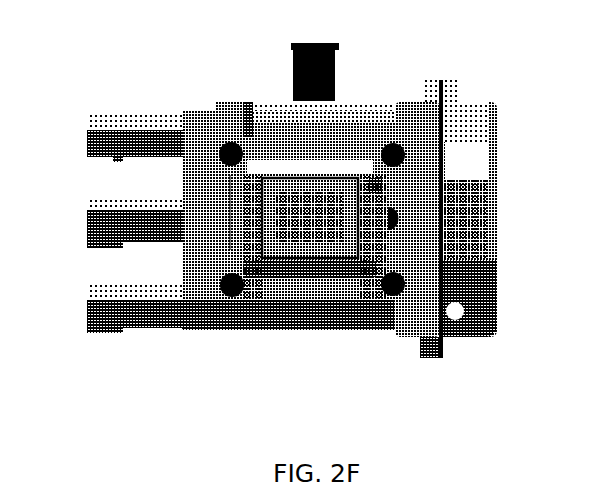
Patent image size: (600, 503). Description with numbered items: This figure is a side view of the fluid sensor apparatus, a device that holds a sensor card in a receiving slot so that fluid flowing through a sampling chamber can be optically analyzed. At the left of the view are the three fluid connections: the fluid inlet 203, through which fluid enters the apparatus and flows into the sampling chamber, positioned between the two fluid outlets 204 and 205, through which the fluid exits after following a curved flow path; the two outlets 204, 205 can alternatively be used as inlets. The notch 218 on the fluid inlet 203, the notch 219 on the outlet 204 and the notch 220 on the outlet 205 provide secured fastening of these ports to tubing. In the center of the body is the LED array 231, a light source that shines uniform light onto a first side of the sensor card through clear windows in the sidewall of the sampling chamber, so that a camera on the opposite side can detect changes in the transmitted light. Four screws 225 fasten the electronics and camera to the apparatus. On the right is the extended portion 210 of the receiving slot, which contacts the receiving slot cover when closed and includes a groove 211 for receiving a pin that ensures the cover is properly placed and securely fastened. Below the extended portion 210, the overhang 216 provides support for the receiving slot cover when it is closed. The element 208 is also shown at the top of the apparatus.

The fluid inlet 203 is at (97, 218).
The fluid outlet 204 is at (98, 128).
The fluid outlet 205 is at (87, 314).
The inlet port 208 is at (338, 58).
The extended portion 210 is at (492, 172).
The groove 211 is at (480, 337).
The overhang 216 is at (433, 358).
The notch 218 is at (120, 283).
The notch 219 is at (118, 244).
The notch 220 is at (121, 158).
The screws 225 is at (220, 145).
The LED array 231 is at (305, 260).